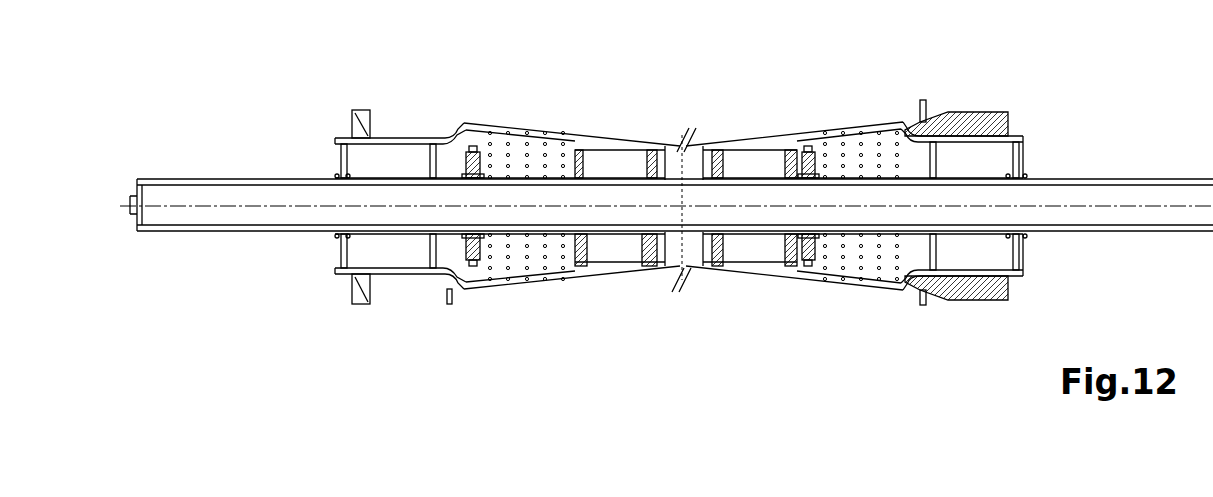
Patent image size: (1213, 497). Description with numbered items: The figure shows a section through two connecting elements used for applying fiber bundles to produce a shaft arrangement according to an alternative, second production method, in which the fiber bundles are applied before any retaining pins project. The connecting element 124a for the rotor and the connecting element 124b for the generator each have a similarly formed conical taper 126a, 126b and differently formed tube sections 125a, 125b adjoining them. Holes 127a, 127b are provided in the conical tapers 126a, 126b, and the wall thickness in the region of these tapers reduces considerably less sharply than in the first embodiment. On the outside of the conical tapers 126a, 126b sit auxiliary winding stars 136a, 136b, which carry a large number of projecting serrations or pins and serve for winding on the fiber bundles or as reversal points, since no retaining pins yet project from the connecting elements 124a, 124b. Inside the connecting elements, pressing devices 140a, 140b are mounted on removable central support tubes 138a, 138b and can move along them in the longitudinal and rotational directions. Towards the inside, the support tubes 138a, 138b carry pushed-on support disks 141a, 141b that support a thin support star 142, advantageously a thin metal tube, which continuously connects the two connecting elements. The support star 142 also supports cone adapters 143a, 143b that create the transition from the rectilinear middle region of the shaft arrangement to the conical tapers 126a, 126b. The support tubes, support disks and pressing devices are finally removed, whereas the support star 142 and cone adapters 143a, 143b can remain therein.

The connecting element for the rotor 124a is at (456, 333).
The connecting element for the generator 124b is at (906, 336).
The tube section 125a is at (382, 109).
The tube section 125b is at (975, 118).
The conical taper 126a is at (498, 122).
The conical taper 126b is at (873, 283).
The holes 127a is at (547, 150).
The holes 127b is at (848, 148).
The auxiliary winding star 136a is at (447, 300).
The auxiliary winding star 136b is at (928, 306).
The central support tube 138a is at (213, 178).
The central support tube 138b is at (1123, 179).
The pressing device 140a is at (455, 157).
The pressing device 140b is at (822, 163).
The support disk 141a is at (652, 168).
The support disk 141b is at (790, 163).
The support star 142 is at (679, 135).
The cone adapter 143a is at (603, 272).
The cone adapter 143b is at (742, 267).